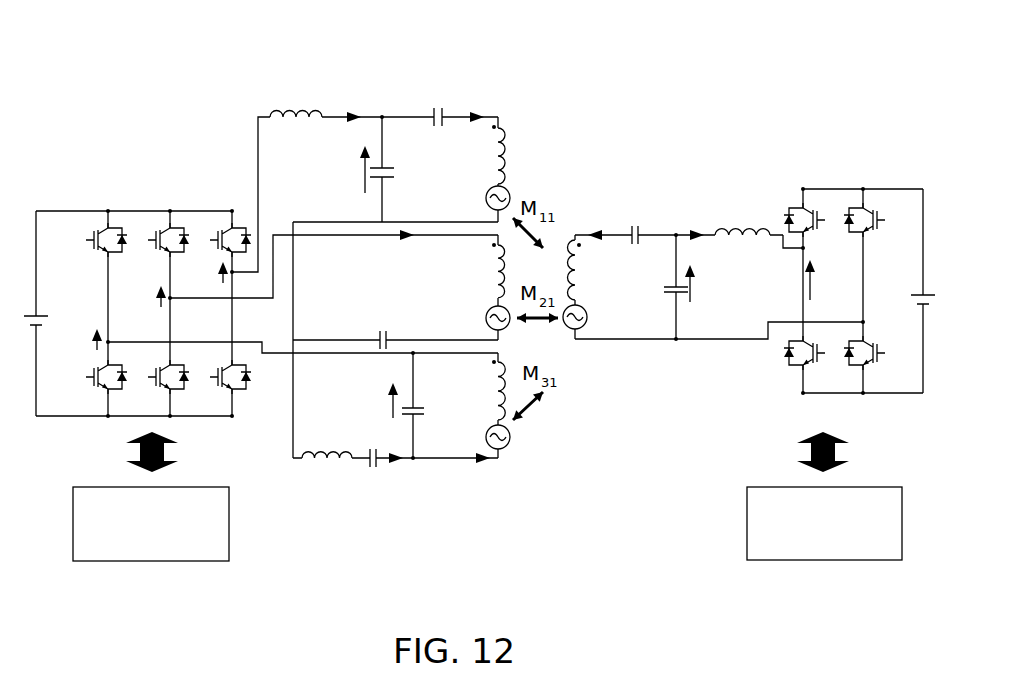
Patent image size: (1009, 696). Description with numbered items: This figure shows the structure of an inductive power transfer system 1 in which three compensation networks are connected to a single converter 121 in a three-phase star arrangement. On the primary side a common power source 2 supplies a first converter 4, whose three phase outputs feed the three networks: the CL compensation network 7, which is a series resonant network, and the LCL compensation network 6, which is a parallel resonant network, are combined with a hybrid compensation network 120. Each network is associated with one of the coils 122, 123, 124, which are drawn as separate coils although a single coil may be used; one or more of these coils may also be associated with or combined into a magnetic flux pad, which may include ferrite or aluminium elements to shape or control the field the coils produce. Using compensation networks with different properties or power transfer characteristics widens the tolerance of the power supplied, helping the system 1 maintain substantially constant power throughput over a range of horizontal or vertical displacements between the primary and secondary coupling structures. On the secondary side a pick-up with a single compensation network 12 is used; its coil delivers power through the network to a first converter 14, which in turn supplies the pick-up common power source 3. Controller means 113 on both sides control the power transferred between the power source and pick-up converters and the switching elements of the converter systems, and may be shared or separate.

The hybrid IPT system 1 is at (890, 138).
The common power source 2 is at (31, 300).
The common power source 3 is at (930, 288).
The first converter 4 is at (141, 220).
The LCL compensation network 6 is at (395, 307).
The CL compensation network 7 is at (432, 148).
The first compensation network 12 is at (698, 311).
The first converter 14 is at (830, 207).
The controller means 113 is at (202, 550).
The hybrid compensation network 120 is at (398, 430).
The single converter 121 is at (717, 212).
The coil 122 is at (507, 132).
The coil 123 is at (512, 258).
The coil 124 is at (524, 441).